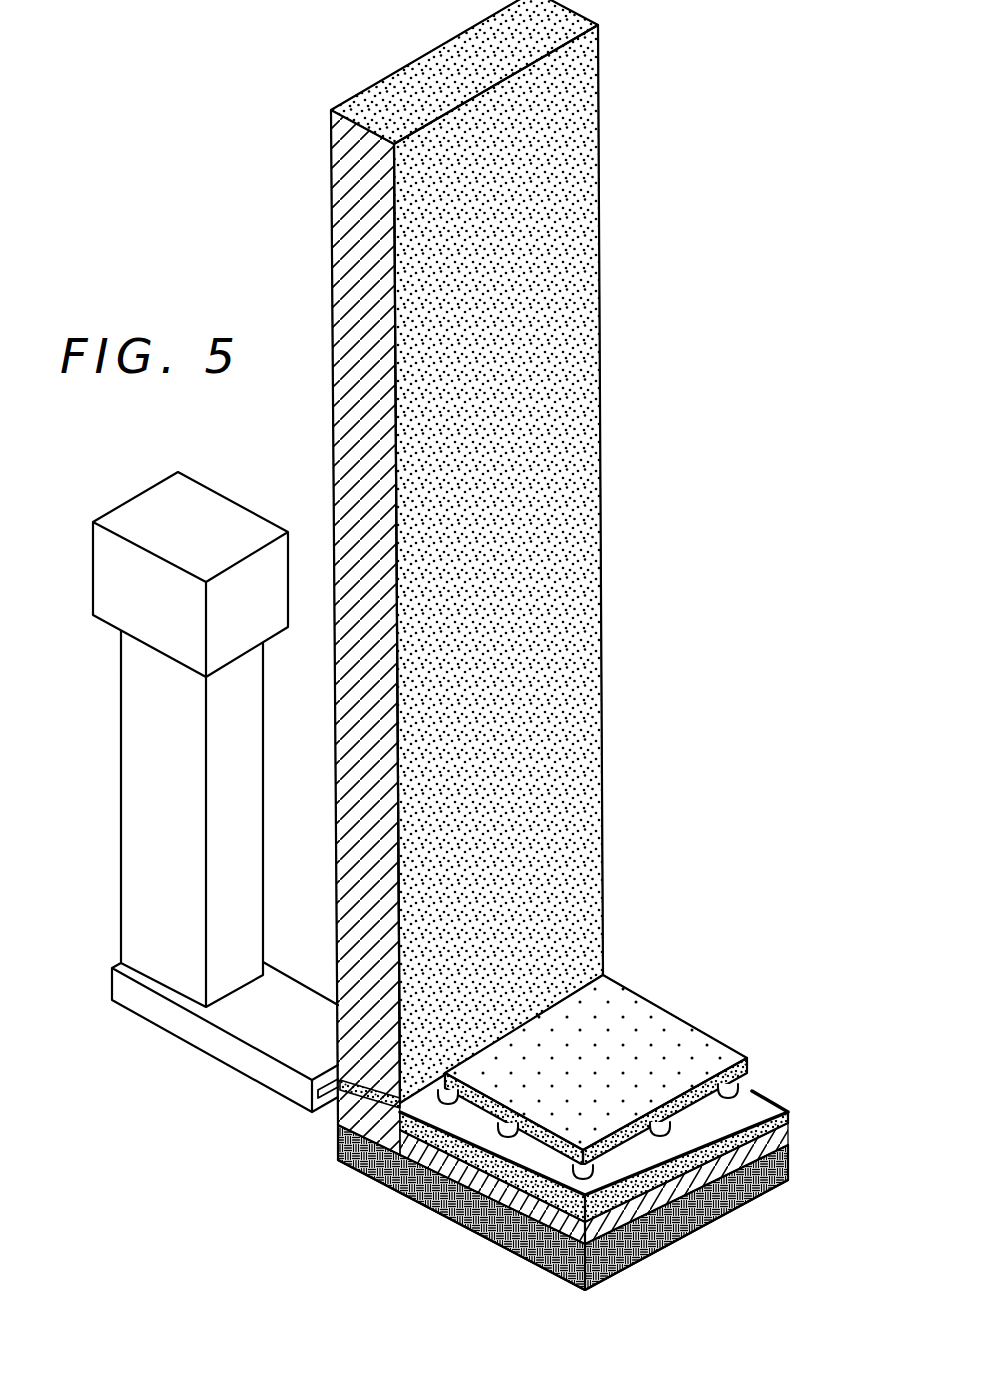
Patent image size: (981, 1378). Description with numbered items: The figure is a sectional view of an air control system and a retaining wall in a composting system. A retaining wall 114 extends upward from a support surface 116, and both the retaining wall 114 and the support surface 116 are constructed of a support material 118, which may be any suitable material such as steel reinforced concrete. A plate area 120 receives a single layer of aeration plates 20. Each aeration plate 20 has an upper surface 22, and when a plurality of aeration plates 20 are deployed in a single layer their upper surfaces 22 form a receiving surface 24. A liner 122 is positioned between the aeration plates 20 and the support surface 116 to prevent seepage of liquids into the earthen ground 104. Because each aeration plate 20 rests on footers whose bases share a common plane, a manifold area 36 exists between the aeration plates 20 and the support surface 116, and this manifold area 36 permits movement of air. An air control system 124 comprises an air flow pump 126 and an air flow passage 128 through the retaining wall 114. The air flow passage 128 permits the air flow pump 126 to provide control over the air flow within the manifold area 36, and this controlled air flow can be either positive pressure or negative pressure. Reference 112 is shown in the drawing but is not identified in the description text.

The heat sink assembly 112 is at (677, 341).
The retaining wall 114 is at (560, 512).
The support surface 116 is at (657, 1178).
The support material 118 is at (773, 1111).
The plate area 120 is at (380, 1173).
The liner 122 is at (752, 1100).
The air control system 124 is at (121, 766).
The air flow pump 126 is at (155, 487).
The air flow passage 128 is at (340, 1102).
The aeration plate 20 is at (621, 1052).
The upper surface 22 is at (614, 1003).
The receiving surface 24 is at (652, 1023).
The manifold area 36 is at (471, 1110).
The earthen ground 104 is at (534, 1242).